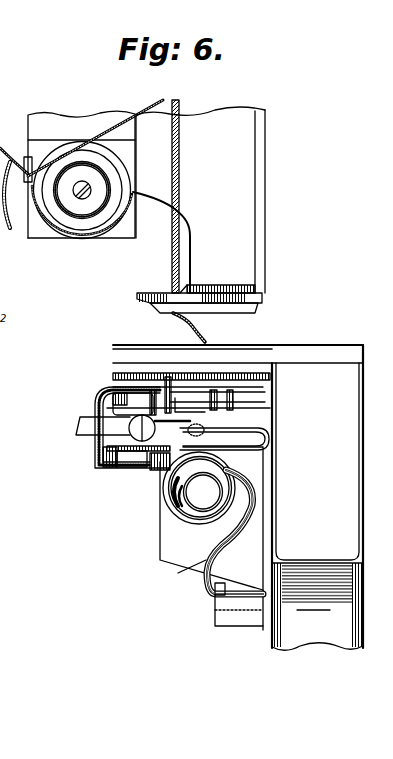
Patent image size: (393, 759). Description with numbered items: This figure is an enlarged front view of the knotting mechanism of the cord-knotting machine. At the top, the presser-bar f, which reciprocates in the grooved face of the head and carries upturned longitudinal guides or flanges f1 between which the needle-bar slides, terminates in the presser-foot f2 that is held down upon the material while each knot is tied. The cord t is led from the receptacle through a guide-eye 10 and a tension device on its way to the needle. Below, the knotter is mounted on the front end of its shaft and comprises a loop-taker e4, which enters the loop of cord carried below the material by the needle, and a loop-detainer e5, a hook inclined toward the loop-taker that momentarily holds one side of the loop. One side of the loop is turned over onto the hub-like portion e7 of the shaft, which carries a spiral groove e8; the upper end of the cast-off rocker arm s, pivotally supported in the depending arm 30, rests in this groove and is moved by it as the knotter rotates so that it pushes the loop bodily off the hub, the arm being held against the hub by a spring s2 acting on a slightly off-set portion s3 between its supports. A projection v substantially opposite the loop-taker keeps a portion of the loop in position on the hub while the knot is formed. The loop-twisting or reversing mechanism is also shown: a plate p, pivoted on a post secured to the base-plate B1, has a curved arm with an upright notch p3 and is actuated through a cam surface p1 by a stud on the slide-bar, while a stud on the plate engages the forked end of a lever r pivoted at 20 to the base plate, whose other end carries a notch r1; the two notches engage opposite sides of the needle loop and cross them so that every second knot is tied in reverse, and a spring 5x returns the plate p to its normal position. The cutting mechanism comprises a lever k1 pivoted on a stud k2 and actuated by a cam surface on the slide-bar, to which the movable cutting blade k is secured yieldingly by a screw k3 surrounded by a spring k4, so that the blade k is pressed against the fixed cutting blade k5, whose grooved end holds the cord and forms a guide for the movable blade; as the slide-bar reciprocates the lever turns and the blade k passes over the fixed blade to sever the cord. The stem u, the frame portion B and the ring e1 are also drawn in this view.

The guide-eye 10 is at (31, 170).
The cord t is at (176, 325).
The presser-bar f is at (230, 120).
The upturned longitudinal guides or flanges f1 is at (146, 122).
The presser-foot f2 is at (210, 303).
The movable cutting blade k is at (173, 238).
The lever k1 is at (78, 424).
The stud k2 is at (101, 393).
The screw k3 is at (130, 430).
The spring k4 is at (179, 431).
The fixed cutting blade k5 is at (255, 438).
The stem u is at (207, 427).
The lever r is at (250, 409).
The notch r1 is at (160, 390).
The pivot 20 is at (262, 395).
The depending arm 30 is at (267, 532).
The frame block B is at (363, 454).
The base-plate B1 is at (336, 352).
The plate p is at (103, 450).
The cam surface p1 is at (220, 410).
The upright notch p3 is at (155, 457).
The spring 5x is at (121, 469).
The projection v is at (185, 468).
The disc e1 is at (214, 469).
The loop-taker e4 is at (196, 512).
The loop-detainer e5 is at (170, 514).
The hub-like portion e7 is at (226, 520).
The spiral groove e8 is at (174, 500).
The rocker arm s is at (183, 573).
The spring s2 is at (242, 627).
The off-set portion s3 is at (226, 593).